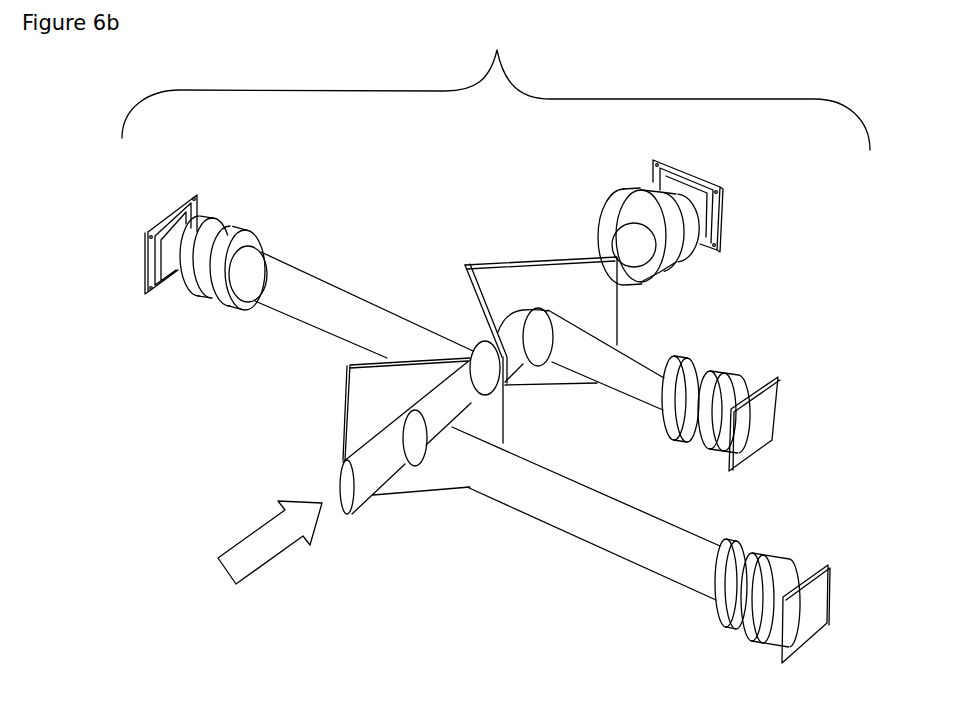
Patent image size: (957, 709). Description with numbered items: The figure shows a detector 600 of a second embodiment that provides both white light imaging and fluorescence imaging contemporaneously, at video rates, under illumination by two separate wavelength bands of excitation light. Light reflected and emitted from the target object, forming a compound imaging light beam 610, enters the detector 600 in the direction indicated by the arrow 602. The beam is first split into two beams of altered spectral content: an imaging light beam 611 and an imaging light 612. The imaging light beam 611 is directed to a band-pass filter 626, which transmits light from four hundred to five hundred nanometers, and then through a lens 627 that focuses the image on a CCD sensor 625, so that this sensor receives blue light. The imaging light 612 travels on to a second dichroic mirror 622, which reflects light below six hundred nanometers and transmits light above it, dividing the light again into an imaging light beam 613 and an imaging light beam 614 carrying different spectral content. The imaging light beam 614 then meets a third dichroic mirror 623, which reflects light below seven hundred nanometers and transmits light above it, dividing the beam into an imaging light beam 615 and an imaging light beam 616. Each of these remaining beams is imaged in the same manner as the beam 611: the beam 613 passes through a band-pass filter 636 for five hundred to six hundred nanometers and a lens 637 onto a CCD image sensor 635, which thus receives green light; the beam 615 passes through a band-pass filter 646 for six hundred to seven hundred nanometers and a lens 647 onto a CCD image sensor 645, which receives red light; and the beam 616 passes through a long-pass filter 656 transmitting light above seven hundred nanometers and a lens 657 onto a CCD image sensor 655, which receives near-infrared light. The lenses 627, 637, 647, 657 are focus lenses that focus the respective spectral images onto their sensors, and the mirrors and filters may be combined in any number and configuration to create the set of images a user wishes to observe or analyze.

The detector 600 is at (496, 85).
The arrow 602 is at (235, 568).
The compound imaging light beam 610 is at (363, 494).
The imaging light beam 611 is at (618, 531).
The imaging light 612 is at (469, 398).
The imaging light beam 613 is at (309, 316).
The imaging light beam 614 is at (514, 340).
The imaging light beam 615 is at (634, 362).
The imaging light beam 616 is at (645, 264).
The second dichroic mirror 622 is at (467, 328).
The third dichroic mirror 623 is at (511, 257).
The CCD sensor 625 is at (821, 576).
The BP filter 626 is at (713, 606).
The lens 627 is at (742, 634).
The CCD image sensor 635 is at (181, 216).
The BP filter 636 is at (215, 311).
The lens 637 is at (173, 291).
The CCD image sensor 645 is at (764, 430).
The BP filter 646 is at (670, 425).
The lens 647 is at (697, 458).
The CCD image sensor 655 is at (684, 167).
The LP filter 656 is at (608, 213).
The lens 657 is at (637, 192).